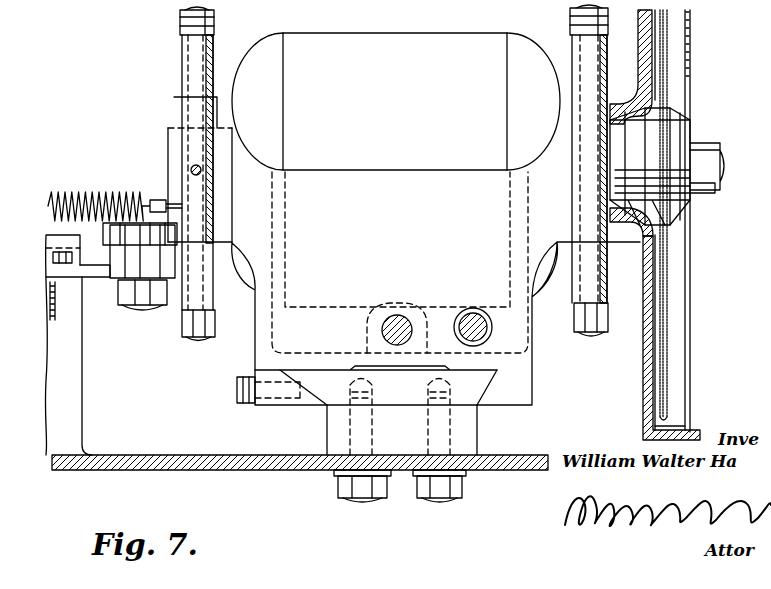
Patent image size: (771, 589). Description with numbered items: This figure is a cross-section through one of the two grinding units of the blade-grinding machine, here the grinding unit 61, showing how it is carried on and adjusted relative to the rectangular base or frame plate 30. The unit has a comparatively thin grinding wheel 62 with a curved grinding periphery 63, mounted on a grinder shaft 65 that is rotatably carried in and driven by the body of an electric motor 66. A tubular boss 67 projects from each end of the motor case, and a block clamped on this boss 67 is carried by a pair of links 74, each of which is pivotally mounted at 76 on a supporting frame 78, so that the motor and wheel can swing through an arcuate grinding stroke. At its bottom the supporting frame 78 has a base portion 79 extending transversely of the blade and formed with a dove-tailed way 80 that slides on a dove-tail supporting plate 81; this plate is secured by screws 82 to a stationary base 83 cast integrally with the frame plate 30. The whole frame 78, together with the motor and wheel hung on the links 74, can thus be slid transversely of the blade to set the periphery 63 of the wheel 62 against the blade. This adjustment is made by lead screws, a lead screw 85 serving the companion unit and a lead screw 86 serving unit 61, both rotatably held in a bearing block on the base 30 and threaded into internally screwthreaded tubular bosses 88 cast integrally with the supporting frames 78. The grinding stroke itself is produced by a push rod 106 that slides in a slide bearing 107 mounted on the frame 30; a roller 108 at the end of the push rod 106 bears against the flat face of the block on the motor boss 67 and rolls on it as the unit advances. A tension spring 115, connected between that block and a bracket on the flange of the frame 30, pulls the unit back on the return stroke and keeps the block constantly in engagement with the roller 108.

The base or frame plate 30 is at (147, 469).
The grinding unit 61 is at (695, 78).
The grinding wheel 62 is at (667, 320).
The curved grinding periphery 63 is at (668, 421).
The grinder shaft 65 is at (722, 166).
The electric motor 66 is at (425, 42).
The tubular boss 67 is at (176, 128).
The links 74 is at (182, 62).
The pivot 76 is at (192, 50).
The supporting frame 78 is at (356, 186).
The base portion 79 is at (256, 372).
The dove-tailed way 80 is at (483, 372).
The dove-tail supporting plate 81 is at (332, 393).
The screws 82 is at (433, 498).
The stationary base 83 is at (327, 438).
The lead screw 85 is at (492, 338).
The lead screw 86 is at (382, 331).
The internally screwthreaded tubular boss 88 is at (403, 305).
The push rod 106 is at (100, 278).
The slide bearing 107 is at (72, 331).
The roller 108 is at (110, 285).
The tension spring 115 is at (96, 198).